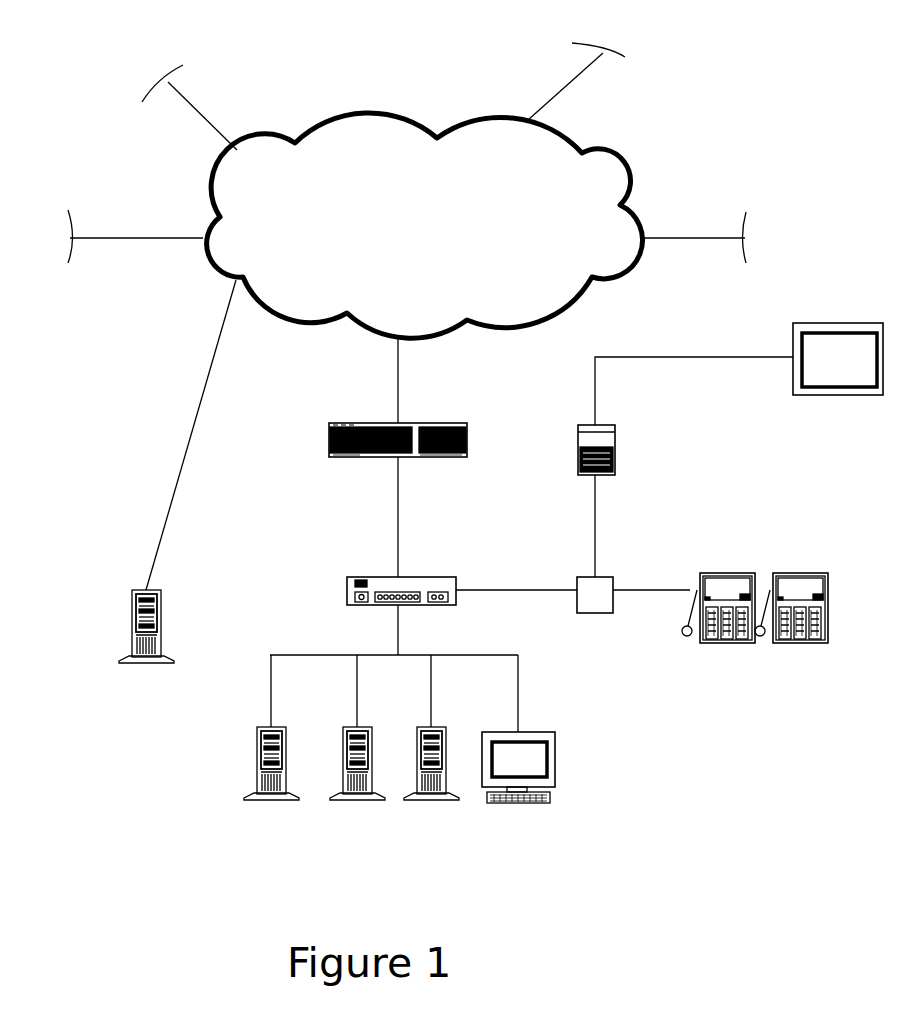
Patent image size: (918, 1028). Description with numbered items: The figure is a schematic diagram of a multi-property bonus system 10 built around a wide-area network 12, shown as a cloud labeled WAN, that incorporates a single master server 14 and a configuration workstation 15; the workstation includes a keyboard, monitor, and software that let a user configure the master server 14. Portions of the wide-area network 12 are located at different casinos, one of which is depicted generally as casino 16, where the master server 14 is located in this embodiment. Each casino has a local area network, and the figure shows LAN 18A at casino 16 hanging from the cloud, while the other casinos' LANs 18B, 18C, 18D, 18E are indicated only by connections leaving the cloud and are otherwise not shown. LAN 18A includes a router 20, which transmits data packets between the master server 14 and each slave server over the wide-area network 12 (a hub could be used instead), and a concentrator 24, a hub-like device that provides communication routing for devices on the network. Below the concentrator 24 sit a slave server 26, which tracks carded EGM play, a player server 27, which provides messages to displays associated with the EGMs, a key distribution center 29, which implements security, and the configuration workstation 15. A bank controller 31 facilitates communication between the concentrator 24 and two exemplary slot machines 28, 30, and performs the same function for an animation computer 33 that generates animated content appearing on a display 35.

The system 10 is at (772, 110).
The wide-area network 12 is at (367, 112).
The master server 14 is at (133, 590).
The configuration workstation 15 is at (557, 745).
The casino 16 is at (80, 637).
The local area network 18A is at (397, 388).
The local area network 18B is at (193, 238).
The local area network 18C is at (207, 118).
The local area network 18D is at (552, 93).
The local area network 18E is at (658, 238).
The router 20 is at (330, 424).
The concentrator 24 is at (346, 588).
The slave server 26 is at (417, 800).
The player server 27 is at (340, 800).
The slot machine 28 is at (732, 575).
The key distribution center 29 is at (258, 740).
The slot machine 30 is at (805, 575).
The bank controller 31 is at (590, 578).
The animation computer 33 is at (580, 428).
The display 35 is at (810, 323).